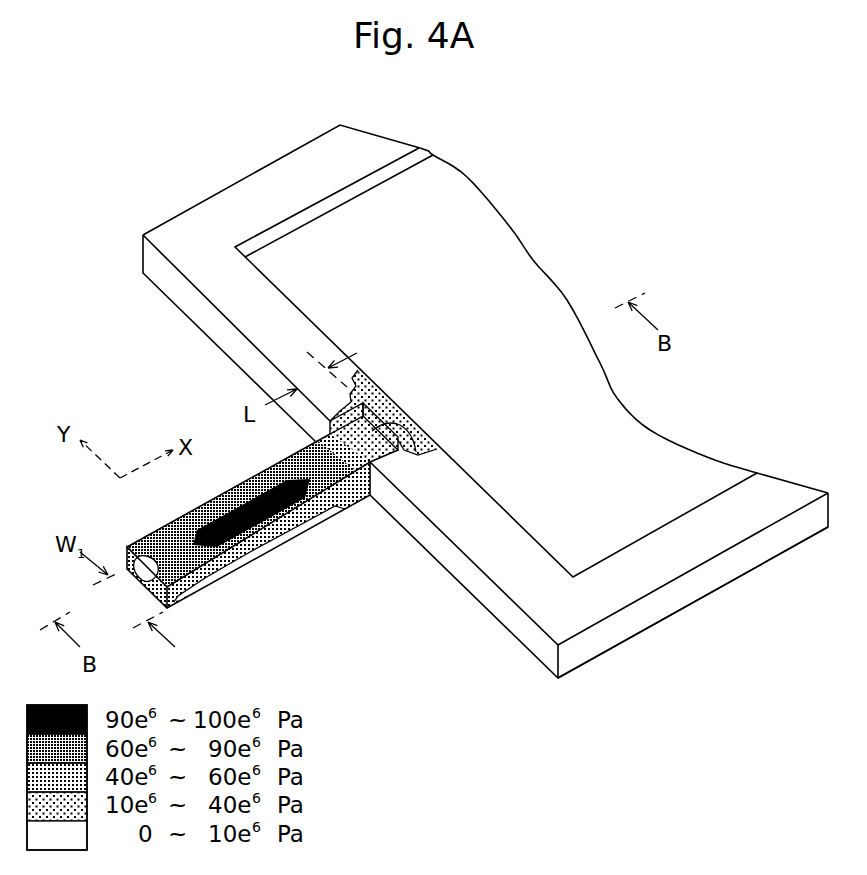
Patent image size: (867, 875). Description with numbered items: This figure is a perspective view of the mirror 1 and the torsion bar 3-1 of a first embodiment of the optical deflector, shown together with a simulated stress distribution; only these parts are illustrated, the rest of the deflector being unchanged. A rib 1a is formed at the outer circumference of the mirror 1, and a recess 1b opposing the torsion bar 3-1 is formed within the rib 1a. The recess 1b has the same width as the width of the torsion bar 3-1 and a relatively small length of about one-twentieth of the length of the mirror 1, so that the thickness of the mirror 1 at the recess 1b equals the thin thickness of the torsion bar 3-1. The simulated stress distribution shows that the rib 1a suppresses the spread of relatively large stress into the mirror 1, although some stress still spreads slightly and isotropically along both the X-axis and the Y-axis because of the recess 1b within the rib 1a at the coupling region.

The mirror 1 is at (485, 449).
The rib 1a is at (545, 595).
The recess 1b is at (386, 428).
The torsion bar 3-1 is at (270, 550).